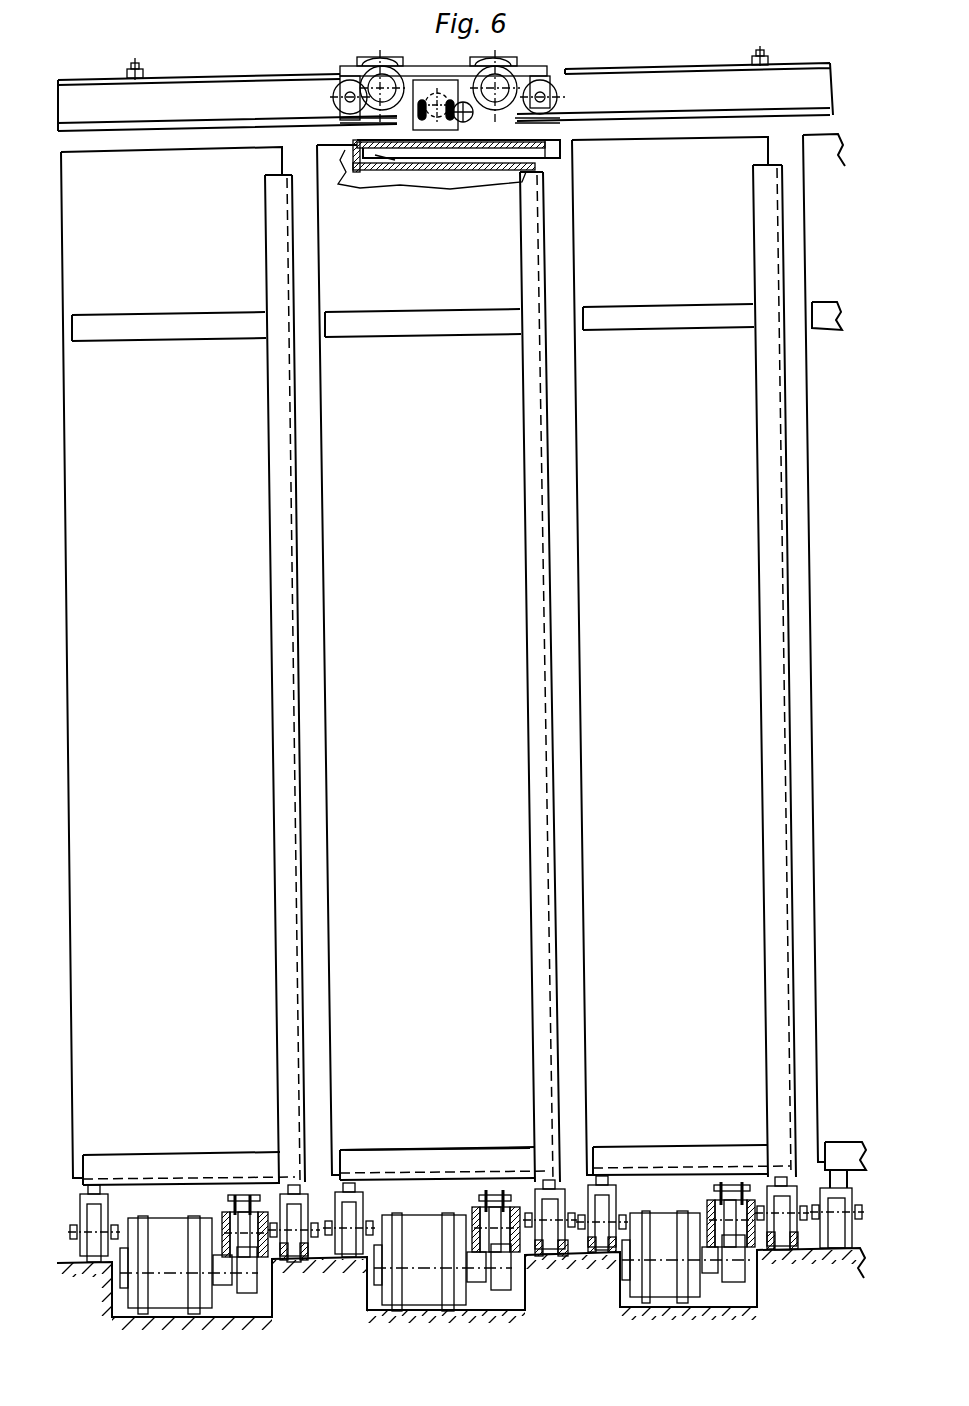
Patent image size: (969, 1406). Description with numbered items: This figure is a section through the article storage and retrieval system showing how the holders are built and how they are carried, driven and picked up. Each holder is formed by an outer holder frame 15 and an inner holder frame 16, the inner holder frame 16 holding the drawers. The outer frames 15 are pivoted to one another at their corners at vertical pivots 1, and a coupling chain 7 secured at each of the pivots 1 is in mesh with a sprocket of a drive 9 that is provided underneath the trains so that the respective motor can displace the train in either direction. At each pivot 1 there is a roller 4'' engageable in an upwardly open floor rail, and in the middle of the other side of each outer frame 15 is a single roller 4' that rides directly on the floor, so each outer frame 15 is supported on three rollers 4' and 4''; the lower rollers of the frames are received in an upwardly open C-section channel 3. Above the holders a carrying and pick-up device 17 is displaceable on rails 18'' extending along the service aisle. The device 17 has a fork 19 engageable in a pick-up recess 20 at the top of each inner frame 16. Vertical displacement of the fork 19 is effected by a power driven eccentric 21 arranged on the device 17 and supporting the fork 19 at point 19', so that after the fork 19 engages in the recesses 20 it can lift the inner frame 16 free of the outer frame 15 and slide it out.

The vertical pivot 1 is at (287, 1184).
The C-section channel 3 is at (570, 1256).
The single roller 4' is at (602, 1179).
The roller 4'' is at (767, 1171).
The coupling chain 7 is at (493, 1193).
The drive 9 is at (247, 1273).
The outer holder frame 15 is at (542, 1132).
The inner holder frame 16 is at (430, 610).
The carrying and pick-up device 17 is at (333, 84).
The rails 18'' is at (445, 74).
The fork 19 is at (489, 166).
The support point 19' is at (421, 74).
The pick-up recess 20 is at (393, 172).
The power driven eccentric 21 is at (447, 112).